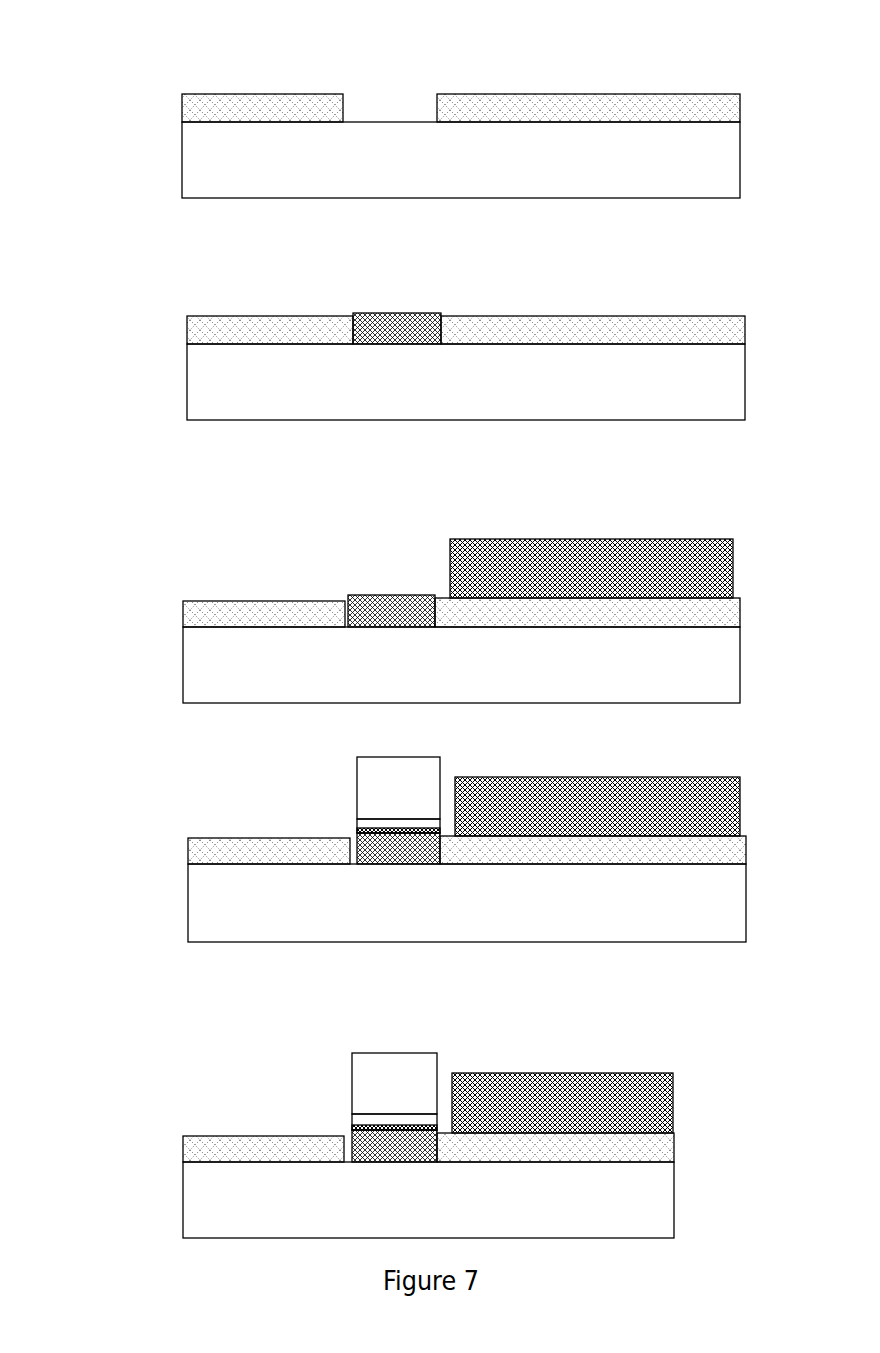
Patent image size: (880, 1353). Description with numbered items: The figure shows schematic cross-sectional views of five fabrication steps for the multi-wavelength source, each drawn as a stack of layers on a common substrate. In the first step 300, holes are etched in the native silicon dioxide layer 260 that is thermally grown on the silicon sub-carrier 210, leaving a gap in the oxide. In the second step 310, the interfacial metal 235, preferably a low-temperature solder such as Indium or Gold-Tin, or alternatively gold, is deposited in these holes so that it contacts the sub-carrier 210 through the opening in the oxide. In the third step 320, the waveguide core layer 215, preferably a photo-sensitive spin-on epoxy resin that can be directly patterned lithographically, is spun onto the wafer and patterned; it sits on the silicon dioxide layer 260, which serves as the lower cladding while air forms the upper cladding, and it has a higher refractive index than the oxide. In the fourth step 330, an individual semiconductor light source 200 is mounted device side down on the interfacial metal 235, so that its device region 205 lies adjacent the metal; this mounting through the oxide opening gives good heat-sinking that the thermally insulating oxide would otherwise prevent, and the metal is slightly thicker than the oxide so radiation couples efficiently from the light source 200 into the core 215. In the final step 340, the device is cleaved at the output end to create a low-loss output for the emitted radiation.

The first step 300 is at (395, 99).
The second step 310 is at (398, 326).
The third step 320 is at (396, 581).
The fourth step 330 is at (403, 855).
The final step 340 is at (368, 1124).
The silicon sub-carrier 210 is at (461, 160).
The silicon dioxide layer 260 is at (282, 105).
The interfacial metal 235 is at (405, 320).
The waveguide core layer 215 is at (508, 548).
The semiconductor light source 200 is at (398, 788).
The device region 205 is at (393, 826).